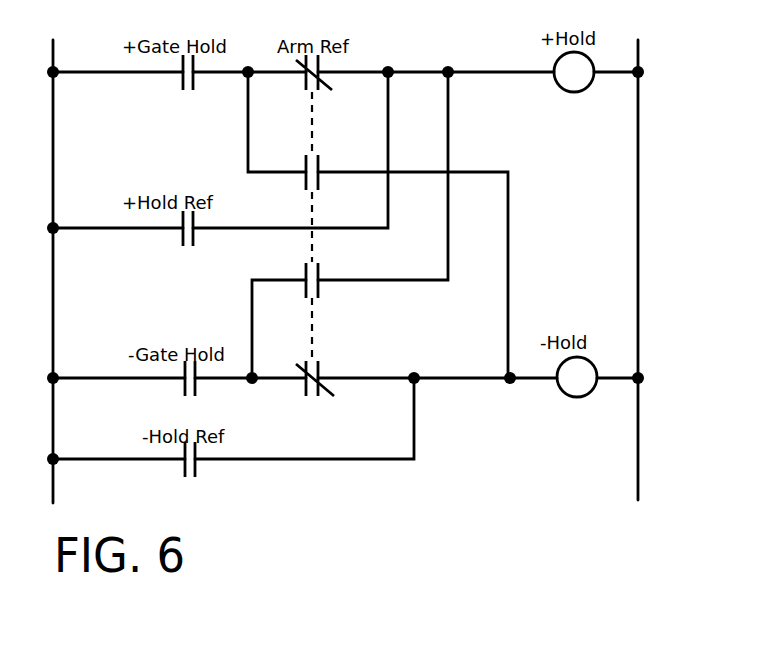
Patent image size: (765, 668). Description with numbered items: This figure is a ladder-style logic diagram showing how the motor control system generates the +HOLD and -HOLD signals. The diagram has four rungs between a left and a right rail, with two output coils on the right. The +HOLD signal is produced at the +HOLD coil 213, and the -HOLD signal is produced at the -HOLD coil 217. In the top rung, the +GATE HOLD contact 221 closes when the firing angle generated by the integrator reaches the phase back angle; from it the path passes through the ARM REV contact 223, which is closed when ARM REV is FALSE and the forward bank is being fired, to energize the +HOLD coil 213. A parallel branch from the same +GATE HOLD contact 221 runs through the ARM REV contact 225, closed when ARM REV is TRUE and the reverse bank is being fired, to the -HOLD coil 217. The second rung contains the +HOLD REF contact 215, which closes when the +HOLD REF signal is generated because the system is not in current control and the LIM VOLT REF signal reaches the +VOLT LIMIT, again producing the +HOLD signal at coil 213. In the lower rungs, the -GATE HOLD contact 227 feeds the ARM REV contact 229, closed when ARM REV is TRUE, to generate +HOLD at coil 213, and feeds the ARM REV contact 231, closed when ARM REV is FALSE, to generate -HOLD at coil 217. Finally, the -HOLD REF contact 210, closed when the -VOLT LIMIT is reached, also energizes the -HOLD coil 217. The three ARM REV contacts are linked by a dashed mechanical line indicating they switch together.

The +GATE HOLD contact 221 is at (183, 84).
The ARM REV contact 223 is at (313, 90).
The +HOLD coil 213 is at (573, 92).
The ARM REV contact 225 is at (318, 180).
The +HOLD REF contact 215 is at (186, 246).
The ARM REV contact 229 is at (313, 298).
The -GATE HOLD contact 227 is at (185, 388).
The ARM REV contact 231 is at (313, 396).
The -HOLD coil 217 is at (576, 397).
The -HOLD REF contact 210 is at (188, 477).